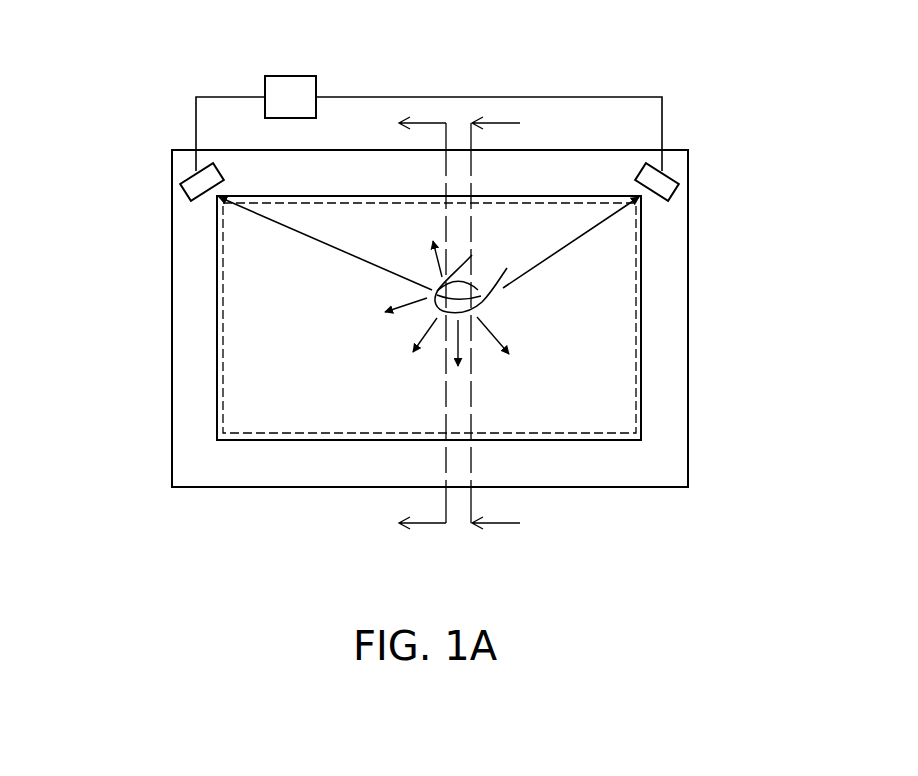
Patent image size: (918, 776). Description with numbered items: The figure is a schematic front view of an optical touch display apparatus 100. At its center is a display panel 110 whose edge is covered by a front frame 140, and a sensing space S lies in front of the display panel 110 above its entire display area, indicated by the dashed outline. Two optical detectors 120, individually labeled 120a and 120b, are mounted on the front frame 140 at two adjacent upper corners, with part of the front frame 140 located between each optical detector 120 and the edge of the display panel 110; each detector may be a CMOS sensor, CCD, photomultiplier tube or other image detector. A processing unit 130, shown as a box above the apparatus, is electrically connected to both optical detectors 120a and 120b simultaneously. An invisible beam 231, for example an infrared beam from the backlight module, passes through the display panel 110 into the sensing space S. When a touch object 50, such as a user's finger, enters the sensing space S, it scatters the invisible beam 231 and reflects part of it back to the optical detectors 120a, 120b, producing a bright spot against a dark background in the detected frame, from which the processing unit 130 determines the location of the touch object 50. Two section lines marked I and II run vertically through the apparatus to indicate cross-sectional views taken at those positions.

The optical touch display apparatus 100 is at (431, 289).
The display panel 110 is at (278, 393).
The optical detector 120 is at (431, 185).
The optical detector 120a is at (197, 188).
The optical detector 120b is at (672, 175).
The processing unit 130 is at (295, 82).
The front frame 140 is at (672, 400).
The invisible beam 231 is at (297, 228).
The touch object 50 is at (483, 297).
The sensing space S is at (635, 243).
The section line I is at (391, 536).
The section line II is at (525, 116).